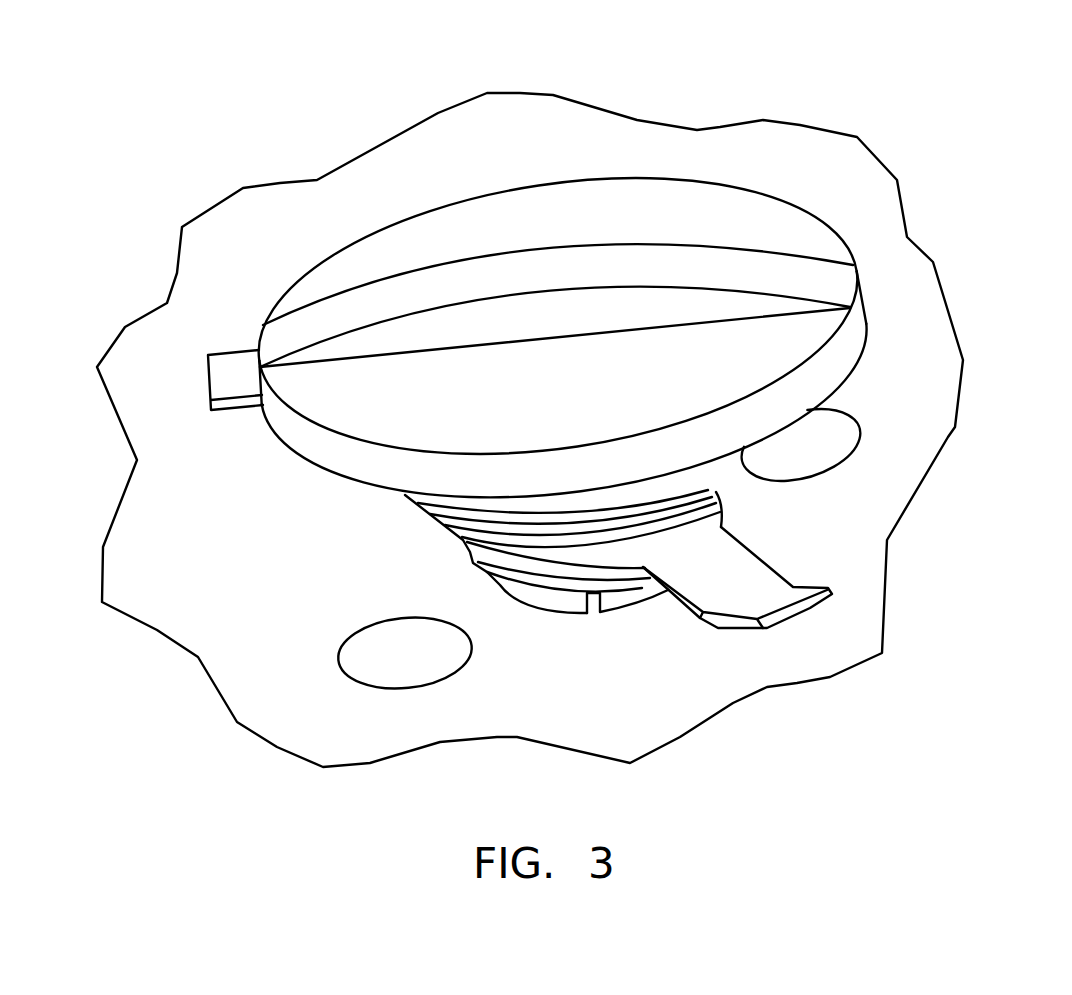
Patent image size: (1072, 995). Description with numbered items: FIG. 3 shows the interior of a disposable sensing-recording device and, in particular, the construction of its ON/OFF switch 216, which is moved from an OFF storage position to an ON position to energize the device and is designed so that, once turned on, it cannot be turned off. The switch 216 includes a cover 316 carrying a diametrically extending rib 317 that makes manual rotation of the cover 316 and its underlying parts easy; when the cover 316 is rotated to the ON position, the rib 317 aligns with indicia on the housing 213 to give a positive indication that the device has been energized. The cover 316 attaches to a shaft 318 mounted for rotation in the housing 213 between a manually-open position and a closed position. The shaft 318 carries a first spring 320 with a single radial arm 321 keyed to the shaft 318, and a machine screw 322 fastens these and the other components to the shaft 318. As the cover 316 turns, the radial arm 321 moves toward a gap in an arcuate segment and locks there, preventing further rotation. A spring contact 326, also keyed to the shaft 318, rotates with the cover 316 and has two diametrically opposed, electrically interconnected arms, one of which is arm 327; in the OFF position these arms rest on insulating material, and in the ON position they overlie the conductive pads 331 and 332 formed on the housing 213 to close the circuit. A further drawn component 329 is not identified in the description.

The housing 213 is at (905, 310).
The ON/OFF switch 216 is at (396, 209).
The cover 316 is at (562, 207).
The rib 317 is at (650, 260).
The radial arm 321 is at (228, 373).
The conductive pad 331 is at (828, 450).
The conductive pad 332 is at (385, 657).
The first spring 320 is at (540, 513).
The collar 329 is at (407, 500).
The spring contact 326 is at (608, 495).
The machine screw 322 is at (640, 592).
The shaft 318 is at (742, 510).
The arm 327 is at (773, 600).